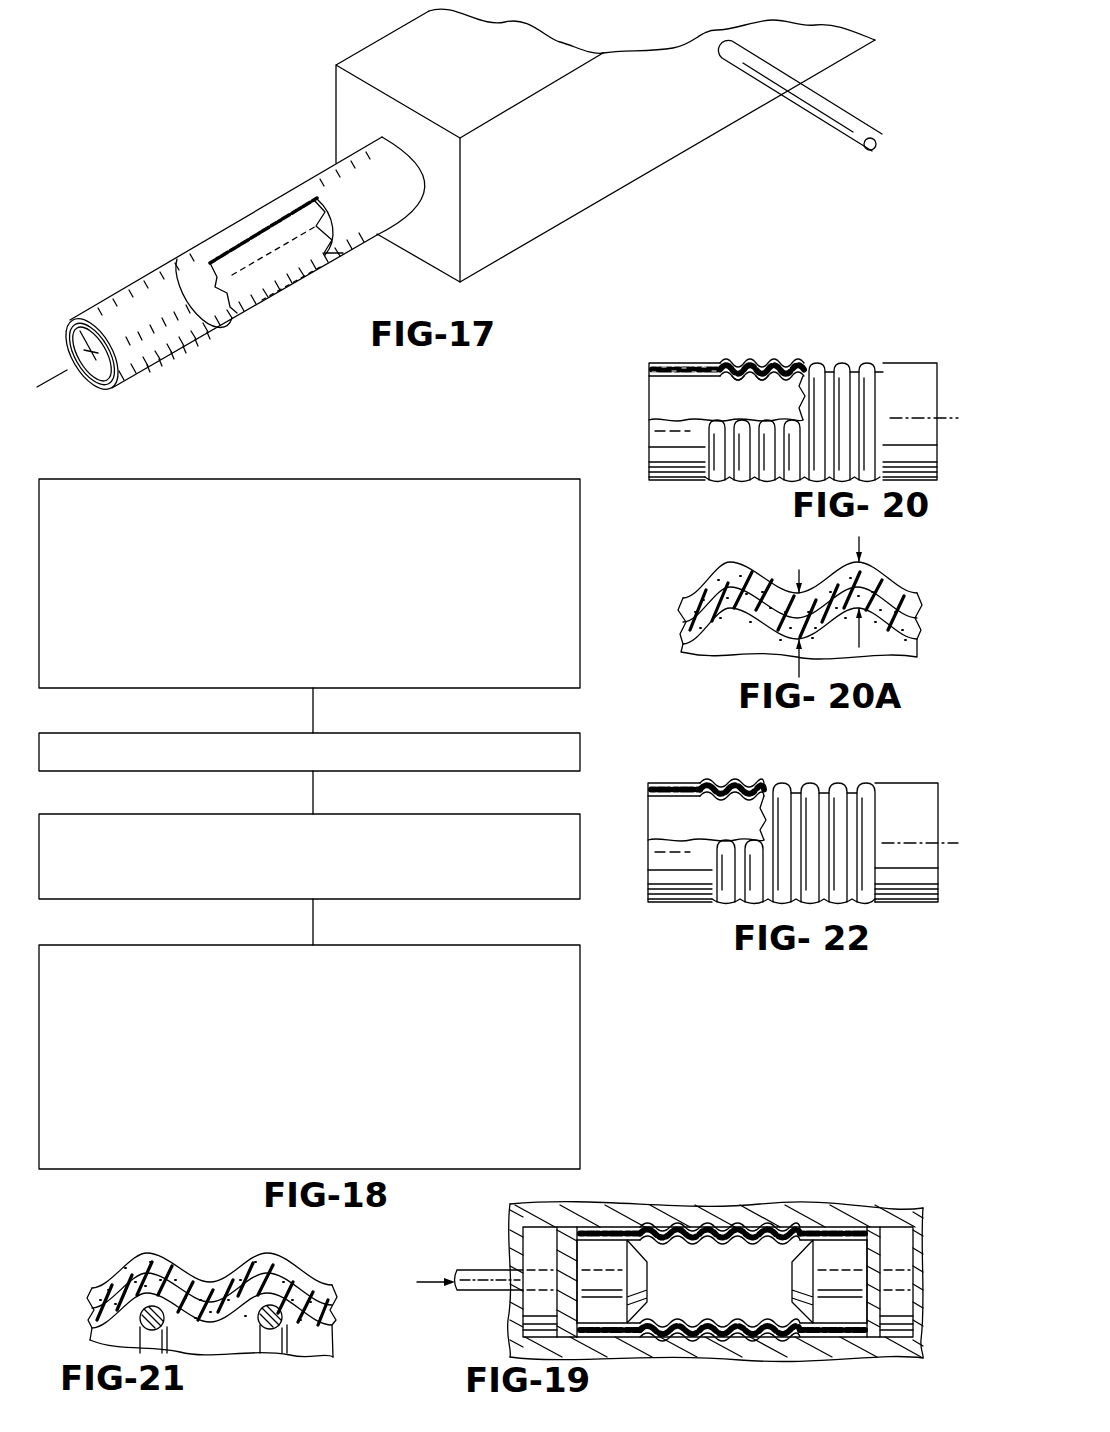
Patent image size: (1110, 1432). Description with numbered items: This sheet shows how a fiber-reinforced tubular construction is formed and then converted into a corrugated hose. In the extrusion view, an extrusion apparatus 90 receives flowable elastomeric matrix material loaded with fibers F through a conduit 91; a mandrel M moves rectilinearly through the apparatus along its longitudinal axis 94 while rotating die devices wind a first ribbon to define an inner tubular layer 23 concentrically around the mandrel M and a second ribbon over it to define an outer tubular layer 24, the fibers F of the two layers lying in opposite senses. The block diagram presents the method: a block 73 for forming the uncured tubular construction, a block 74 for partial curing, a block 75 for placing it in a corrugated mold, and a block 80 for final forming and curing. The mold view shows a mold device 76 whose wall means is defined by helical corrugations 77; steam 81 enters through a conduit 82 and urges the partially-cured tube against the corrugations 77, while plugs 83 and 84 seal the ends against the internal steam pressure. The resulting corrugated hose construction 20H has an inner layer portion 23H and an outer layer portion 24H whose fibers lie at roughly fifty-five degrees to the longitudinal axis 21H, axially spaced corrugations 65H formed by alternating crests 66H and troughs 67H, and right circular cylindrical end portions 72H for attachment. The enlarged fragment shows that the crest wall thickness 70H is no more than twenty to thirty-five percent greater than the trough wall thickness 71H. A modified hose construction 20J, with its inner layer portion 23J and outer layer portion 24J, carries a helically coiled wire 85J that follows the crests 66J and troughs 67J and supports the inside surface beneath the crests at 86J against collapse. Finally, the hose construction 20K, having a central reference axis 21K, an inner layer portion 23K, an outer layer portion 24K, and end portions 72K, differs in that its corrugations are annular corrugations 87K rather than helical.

In FIG. 17, the extrusion apparatus 90 is at (573, 52).
In FIG. 17, the conduit 91 is at (840, 107).
In FIG. 17, the outer tubular layer 24 is at (178, 263).
In FIG. 17, the inner tubular layer 23 is at (316, 256).
In FIG. 17, the fibers F is at (180, 360).
In FIG. 20, the fibers F is at (650, 363).
In FIG. 17, the mandrel M is at (77, 328).
In FIG. 17, the longitudinal axis 94 is at (62, 376).
In FIG. 18, the forming block 73 is at (372, 480).
In FIG. 18, the partial curing block 74 is at (557, 733).
In FIG. 18, the mold placing block 75 is at (547, 814).
In FIG. 18, the final forming and curing block 80 is at (553, 945).
In FIG. 20, the corrugated hose construction 20H is at (834, 324).
In FIG. 20, the outer layer portion 24H is at (680, 363).
In FIG. 20A, the outer layer portion 24H is at (707, 588).
In FIG. 20, the crests 66H is at (744, 371).
In FIG. 20, the troughs 67H is at (744, 385).
In FIG. 20, the corrugations 65H is at (830, 363).
In FIG. 20, the longitudinal axis 21H is at (958, 418).
In FIG. 20, the inner layer portion 23H is at (657, 376).
In FIG. 20A, the inner layer portion 23H is at (687, 653).
In FIG. 20, the end portions 72H is at (672, 480).
In FIG. 20A, the wall thickness of the troughs 71H is at (797, 575).
In FIG. 20A, the wall thickness of the crests 70H is at (862, 545).
In FIG. 22, the corrugated hose construction 20K is at (860, 766).
In FIG. 22, the outer layer portion 24K is at (690, 785).
In FIG. 22, the annular corrugations 87K is at (797, 783).
In FIG. 22, the central reference axis 21K is at (958, 843).
In FIG. 22, the inner layer portion 23K is at (680, 797).
In FIG. 22, the end portions 72K is at (693, 902).
In FIG. 21, the hose construction 20J is at (114, 1247).
In FIG. 21, the outer layer portion 24J is at (110, 1282).
In FIG. 21, the inner layer portion 23J is at (97, 1313).
In FIG. 21, the crests 66J is at (267, 1253).
In FIG. 21, the troughs 67J is at (227, 1350).
In FIG. 21, the support location beneath crests 86J is at (124, 1328).
In FIG. 21, the helical wire 85J is at (313, 1342).
In FIG. 19, the mold device 76 is at (627, 1199).
In FIG. 19, the corrugations 77 is at (721, 1225).
In FIG. 19, the steam 81 is at (435, 1280).
In FIG. 19, the conduit 82 is at (478, 1292).
In FIG. 19, the plug 83 is at (630, 1337).
In FIG. 19, the plug 84 is at (833, 1313).